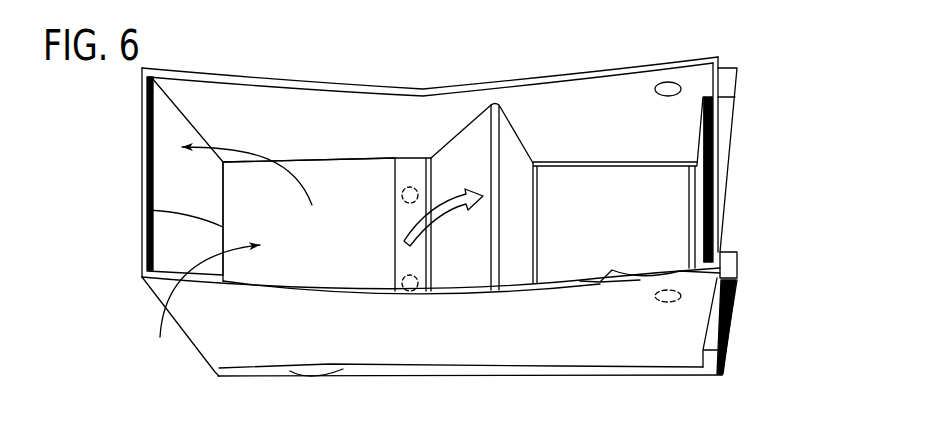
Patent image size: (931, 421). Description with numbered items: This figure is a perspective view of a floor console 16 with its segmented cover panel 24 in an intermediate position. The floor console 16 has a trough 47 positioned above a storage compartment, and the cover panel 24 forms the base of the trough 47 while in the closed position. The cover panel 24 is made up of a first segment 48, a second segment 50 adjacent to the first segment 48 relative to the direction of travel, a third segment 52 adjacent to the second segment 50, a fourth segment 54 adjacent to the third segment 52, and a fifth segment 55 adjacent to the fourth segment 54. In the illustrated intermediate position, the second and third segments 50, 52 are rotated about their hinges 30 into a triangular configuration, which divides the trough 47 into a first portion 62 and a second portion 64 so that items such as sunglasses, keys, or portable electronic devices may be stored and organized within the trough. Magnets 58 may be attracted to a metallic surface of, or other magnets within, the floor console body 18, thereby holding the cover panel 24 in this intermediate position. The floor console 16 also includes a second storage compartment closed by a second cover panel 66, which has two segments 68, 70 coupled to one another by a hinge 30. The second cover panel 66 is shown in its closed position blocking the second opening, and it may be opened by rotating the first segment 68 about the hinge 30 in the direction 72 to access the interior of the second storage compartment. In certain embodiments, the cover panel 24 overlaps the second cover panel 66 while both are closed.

The floor console 16 is at (425, 75).
The floor console body 18 is at (253, 353).
The cover panel 24 is at (547, 112).
The hinge 30 is at (143, 207).
The trough 47 is at (653, 50).
The first segment 48 is at (415, 173).
The second segment 50 is at (477, 273).
The third segment 52 is at (517, 265).
The fourth segment 54 is at (662, 209).
The fifth segment 55 is at (703, 214).
The magnets 58 is at (397, 157).
The first portion 62 is at (696, 99).
The second portion 64 is at (203, 304).
The second cover panel 66 is at (278, 118).
The first segment 68 is at (374, 231).
The second segment 70 is at (199, 198).
The direction 72 is at (233, 147).